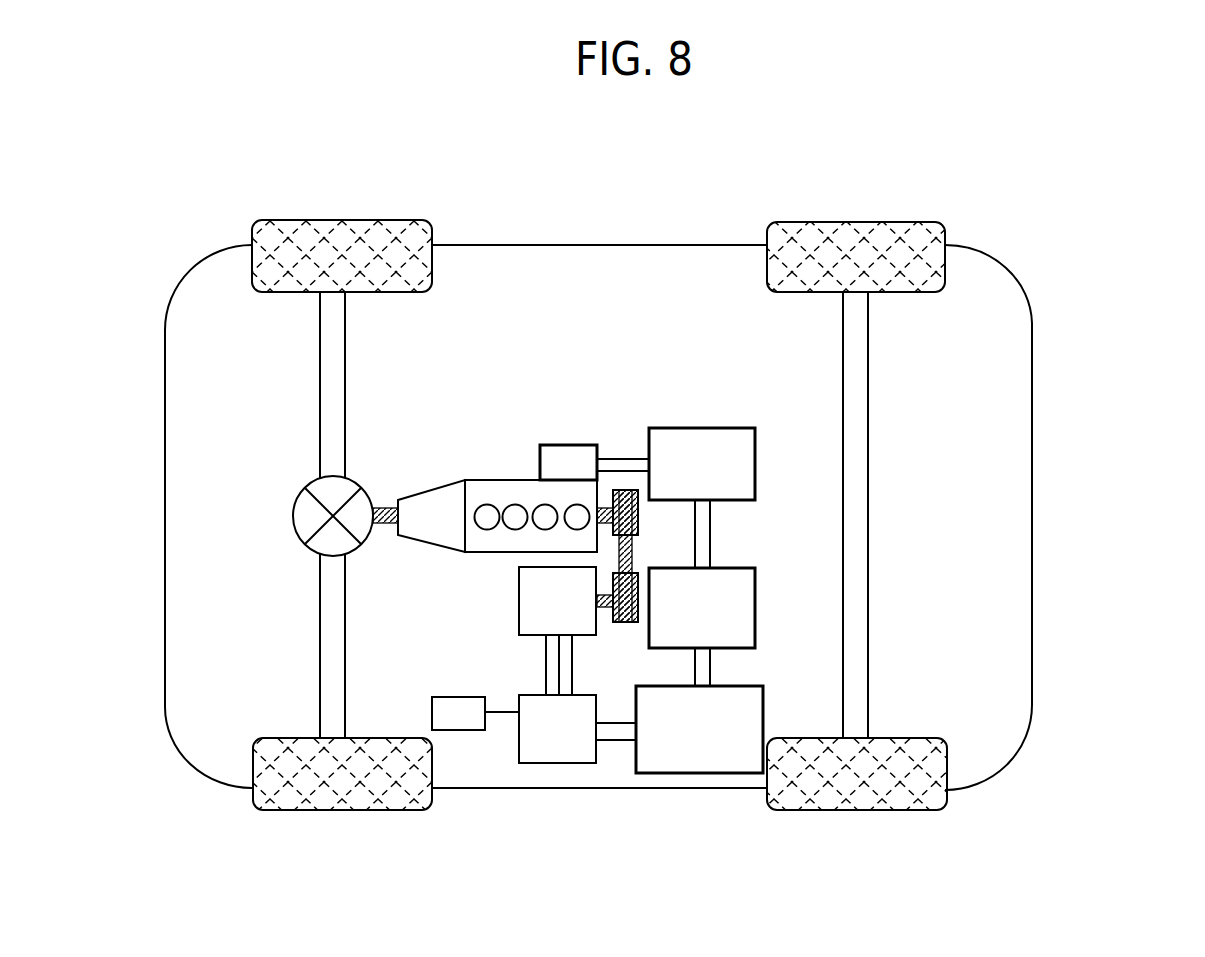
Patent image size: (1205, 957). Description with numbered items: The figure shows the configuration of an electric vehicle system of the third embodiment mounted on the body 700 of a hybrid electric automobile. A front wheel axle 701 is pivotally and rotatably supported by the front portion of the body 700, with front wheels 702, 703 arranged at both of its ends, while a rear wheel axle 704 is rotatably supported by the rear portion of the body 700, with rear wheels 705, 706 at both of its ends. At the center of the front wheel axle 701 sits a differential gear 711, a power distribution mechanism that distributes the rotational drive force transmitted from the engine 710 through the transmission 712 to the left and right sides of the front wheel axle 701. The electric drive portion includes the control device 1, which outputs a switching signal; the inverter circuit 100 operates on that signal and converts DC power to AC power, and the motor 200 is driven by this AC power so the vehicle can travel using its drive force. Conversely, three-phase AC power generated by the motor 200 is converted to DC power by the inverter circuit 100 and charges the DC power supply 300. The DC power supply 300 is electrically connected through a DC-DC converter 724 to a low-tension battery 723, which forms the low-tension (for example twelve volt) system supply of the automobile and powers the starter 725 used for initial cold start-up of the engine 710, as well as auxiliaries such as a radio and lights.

The control device 1 is at (442, 697).
The inverter circuit 100 is at (530, 695).
The motor 200 is at (519, 603).
The DC power supply 300 is at (715, 775).
The body 700 is at (1032, 407).
The front wheel axle 701 is at (320, 392).
The front wheel 702 is at (340, 220).
The front wheel 703 is at (347, 810).
The rear wheel axle 704 is at (868, 515).
The rear wheel 705 is at (855, 222).
The rear wheel 706 is at (860, 810).
The engine 710 is at (505, 478).
The differential gear 711 is at (293, 517).
The transmission 712 is at (423, 488).
The low-tension battery 723 is at (707, 428).
The DC-DC converter 724 is at (755, 607).
The starter 725 is at (567, 447).